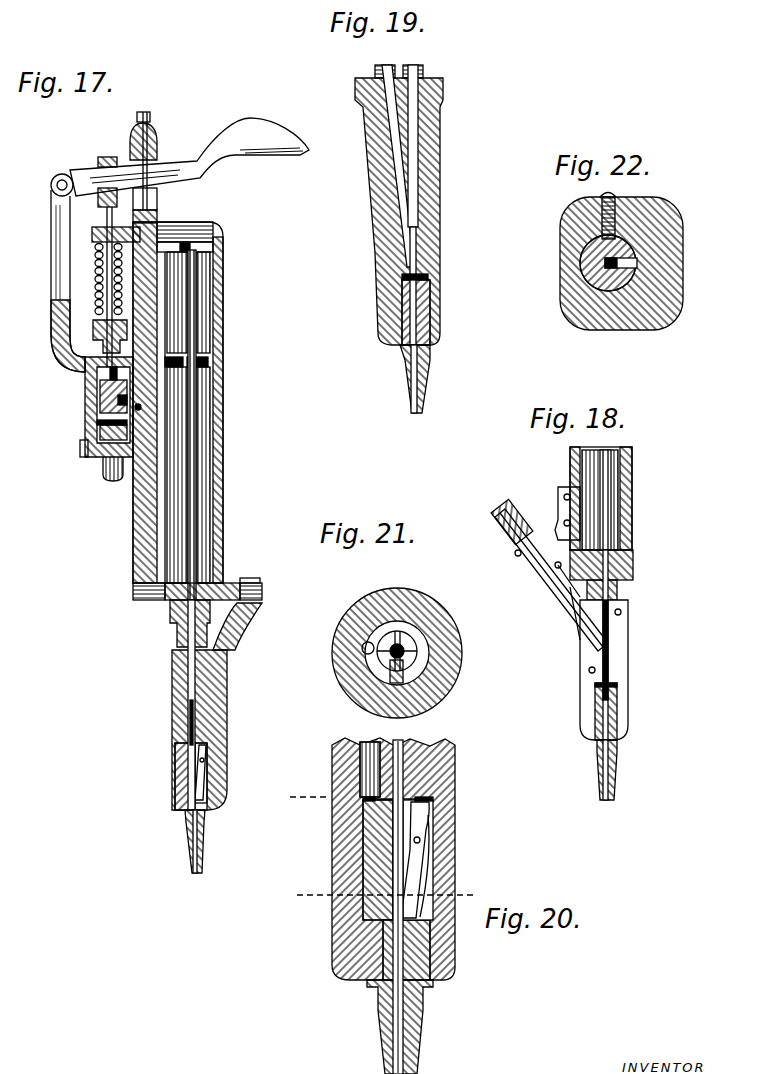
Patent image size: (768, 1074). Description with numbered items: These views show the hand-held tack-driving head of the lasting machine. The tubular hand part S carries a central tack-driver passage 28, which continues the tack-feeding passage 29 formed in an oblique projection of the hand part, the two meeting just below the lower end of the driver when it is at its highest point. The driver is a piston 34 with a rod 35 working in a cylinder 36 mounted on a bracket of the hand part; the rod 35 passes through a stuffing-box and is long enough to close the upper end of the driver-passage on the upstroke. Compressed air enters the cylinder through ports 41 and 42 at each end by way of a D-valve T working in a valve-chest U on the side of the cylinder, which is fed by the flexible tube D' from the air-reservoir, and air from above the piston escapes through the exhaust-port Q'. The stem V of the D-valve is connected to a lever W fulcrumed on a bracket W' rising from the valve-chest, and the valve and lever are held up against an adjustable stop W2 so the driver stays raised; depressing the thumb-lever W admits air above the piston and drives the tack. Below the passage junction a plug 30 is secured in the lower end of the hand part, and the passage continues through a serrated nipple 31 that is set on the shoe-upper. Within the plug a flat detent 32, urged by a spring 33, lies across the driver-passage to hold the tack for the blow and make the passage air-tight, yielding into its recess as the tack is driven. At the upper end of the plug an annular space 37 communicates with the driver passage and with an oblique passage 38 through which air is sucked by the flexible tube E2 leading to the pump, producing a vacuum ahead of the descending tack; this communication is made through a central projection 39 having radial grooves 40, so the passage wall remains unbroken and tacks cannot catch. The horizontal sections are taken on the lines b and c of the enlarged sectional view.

In FIG. 17, the thumb-lever W is at (189, 157).
In FIG. 17, the bracket W' is at (56, 273).
In FIG. 17, the adjustable stop W2 is at (155, 167).
In FIG. 17, the stem of the D-valve V is at (106, 262).
In FIG. 17, the port 41 is at (135, 250).
In FIG. 17, the piston 34 is at (223, 280).
In FIG. 17, the cylinder 36 is at (223, 428).
In FIG. 18, the cylinder 36 is at (613, 498).
In FIG. 17, the rod 35 is at (201, 425).
In FIG. 18, the rod 35 is at (609, 500).
In FIG. 20, the rod 35 is at (370, 769).
In FIG. 17, the D-valve T is at (100, 406).
In FIG. 17, the valve-chest U is at (90, 432).
In FIG. 17, the exhaust-port Q' is at (198, 395).
In FIG. 17, the port 42 is at (150, 583).
In FIG. 17, the tubular hand part S is at (217, 706).
In FIG. 22, the tubular hand part S is at (632, 263).
In FIG. 18, the tubular hand part S is at (612, 670).
In FIG. 21, the tubular hand part S is at (394, 653).
In FIG. 20, the tubular hand part S is at (384, 859).
In FIG. 17, the tack-driver passage 28 is at (188, 680).
In FIG. 19, the tack-driver passage 28 is at (417, 236).
In FIG. 22, the tack-driver passage 28 is at (580, 266).
In FIG. 18, the tack-driver passage 28 is at (609, 643).
In FIG. 20, the tack-driver passage 28 is at (400, 748).
In FIG. 17, the plug 30 is at (185, 788).
In FIG. 19, the plug 30 is at (402, 307).
In FIG. 22, the plug 30 is at (592, 284).
In FIG. 18, the plug 30 is at (606, 711).
In FIG. 21, the plug 30 is at (377, 670).
In FIG. 20, the plug 30 is at (396, 890).
In FIG. 17, the nipple 31 is at (206, 841).
In FIG. 19, the nipple 31 is at (426, 379).
In FIG. 18, the nipple 31 is at (617, 770).
In FIG. 20, the nipple 31 is at (404, 1027).
In FIG. 19, the flexible tube E2 is at (364, 66).
In FIG. 19, the flexible tube D' is at (433, 68).
In FIG. 19, the oblique passage 38 is at (398, 175).
In FIG. 21, the oblique passage 38 is at (362, 650).
In FIG. 19, the tack-feeding passage 29 is at (417, 172).
In FIG. 18, the tack-feeding passage 29 is at (567, 608).
In FIG. 21, the annular space 37 is at (395, 625).
In FIG. 20, the annular space 37 is at (416, 800).
In FIG. 21, the central projection 39 is at (407, 637).
In FIG. 21, the radial grooves 40 is at (417, 651).
In FIG. 20, the detent 32 is at (415, 860).
In FIG. 20, the spring 33 is at (433, 882).
In FIG. 20, the section line b is at (303, 794).
In FIG. 20, the section line c is at (379, 893).